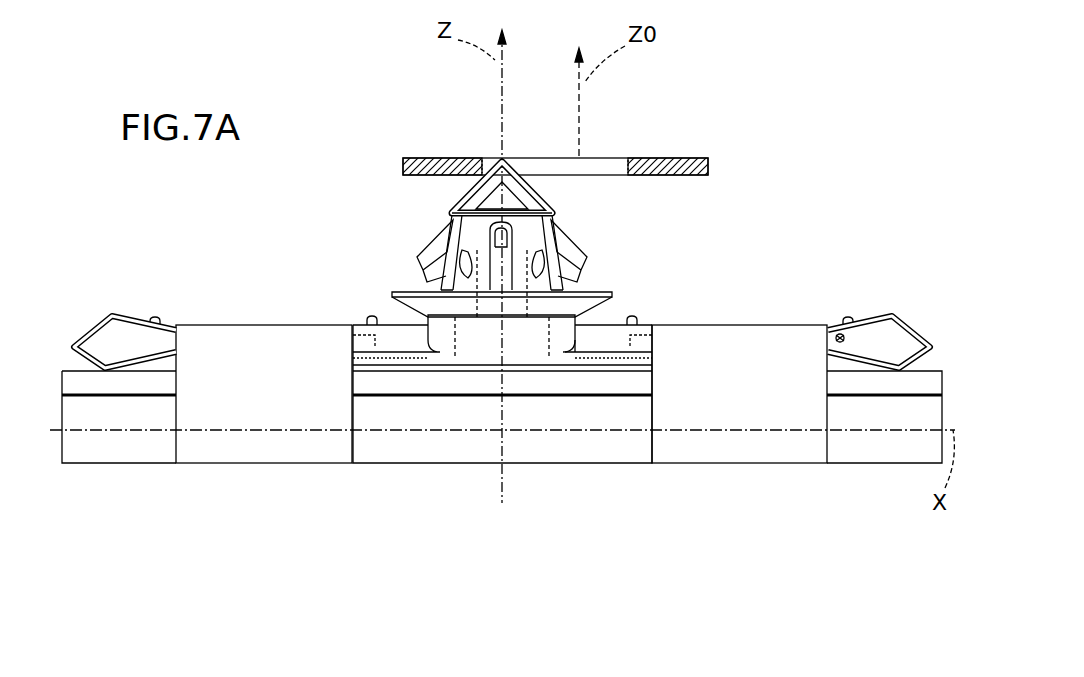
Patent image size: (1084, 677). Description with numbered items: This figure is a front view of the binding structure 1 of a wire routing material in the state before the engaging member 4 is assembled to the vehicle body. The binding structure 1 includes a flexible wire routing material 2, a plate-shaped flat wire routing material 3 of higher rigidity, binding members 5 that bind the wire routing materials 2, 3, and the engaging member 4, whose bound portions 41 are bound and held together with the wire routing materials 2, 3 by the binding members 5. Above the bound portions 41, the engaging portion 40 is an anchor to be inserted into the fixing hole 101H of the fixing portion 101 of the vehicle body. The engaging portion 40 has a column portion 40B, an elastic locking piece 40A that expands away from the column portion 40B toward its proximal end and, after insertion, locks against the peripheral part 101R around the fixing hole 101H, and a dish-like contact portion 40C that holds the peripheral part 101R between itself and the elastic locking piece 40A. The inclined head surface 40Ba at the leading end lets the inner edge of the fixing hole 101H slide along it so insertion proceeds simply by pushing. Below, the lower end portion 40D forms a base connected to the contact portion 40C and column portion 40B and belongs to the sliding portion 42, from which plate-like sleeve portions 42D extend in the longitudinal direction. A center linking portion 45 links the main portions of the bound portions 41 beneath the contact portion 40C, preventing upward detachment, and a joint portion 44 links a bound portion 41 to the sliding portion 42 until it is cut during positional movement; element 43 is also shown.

The binding structure 1 is at (160, 490).
The flexible wire routing material 2 is at (398, 458).
The flat wire routing material 3 is at (463, 396).
The engaging member 4 is at (492, 301).
The binding member 5 is at (260, 322).
The engaging portion 40 is at (485, 189).
The elastic locking piece 40A is at (422, 248).
The column portion 40B is at (478, 243).
The head surface 40Ba is at (526, 196).
The contact portion 40C is at (415, 308).
The lower end portion 40D is at (518, 345).
The bound portion 41 is at (155, 316).
The sliding portion 42 is at (503, 397).
The sleeve portion 42D is at (364, 360).
The band clip 43 is at (78, 320).
The joint portion 44 is at (838, 328).
The center linking portion 45 is at (600, 318).
The fixing portion 101 is at (590, 157).
The fixing hole 101H is at (593, 168).
The peripheral part 101R is at (416, 158).